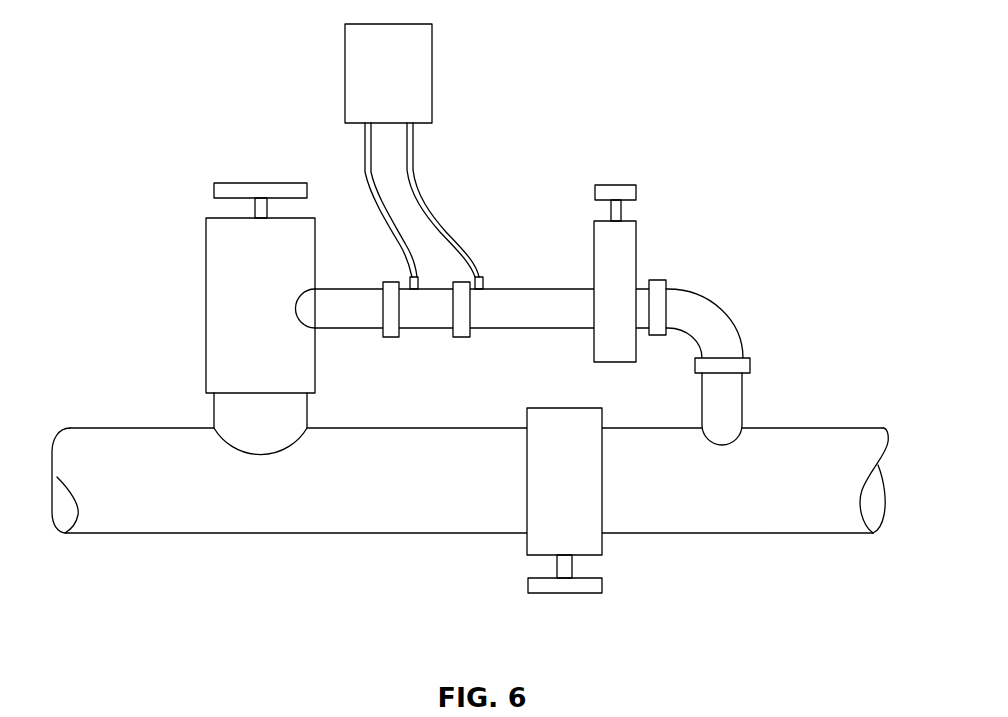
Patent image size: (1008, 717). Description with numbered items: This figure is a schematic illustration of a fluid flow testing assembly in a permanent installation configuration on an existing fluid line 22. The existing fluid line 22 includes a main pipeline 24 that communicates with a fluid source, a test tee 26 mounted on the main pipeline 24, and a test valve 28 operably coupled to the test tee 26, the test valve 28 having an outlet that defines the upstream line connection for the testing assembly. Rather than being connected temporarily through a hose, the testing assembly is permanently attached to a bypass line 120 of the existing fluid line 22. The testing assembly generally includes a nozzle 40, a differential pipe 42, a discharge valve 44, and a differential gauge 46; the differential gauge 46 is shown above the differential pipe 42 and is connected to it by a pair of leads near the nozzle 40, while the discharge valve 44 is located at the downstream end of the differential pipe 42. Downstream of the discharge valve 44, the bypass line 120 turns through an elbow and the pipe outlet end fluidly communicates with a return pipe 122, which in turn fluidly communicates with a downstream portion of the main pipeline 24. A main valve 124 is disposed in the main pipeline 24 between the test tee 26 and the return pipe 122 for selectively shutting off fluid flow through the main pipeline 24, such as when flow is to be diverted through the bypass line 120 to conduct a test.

The existing fluid line 22 is at (258, 512).
The main pipeline 24 is at (427, 525).
The test tee 26 is at (230, 422).
The test valve 28 is at (213, 288).
The nozzle 40 is at (432, 294).
The differential pipe 42 is at (513, 302).
The discharge valve 44 is at (600, 248).
The differential gauge 46 is at (422, 89).
The bypass line 120 is at (713, 316).
The return pipe 122 is at (743, 403).
The main valve 124 is at (593, 542).